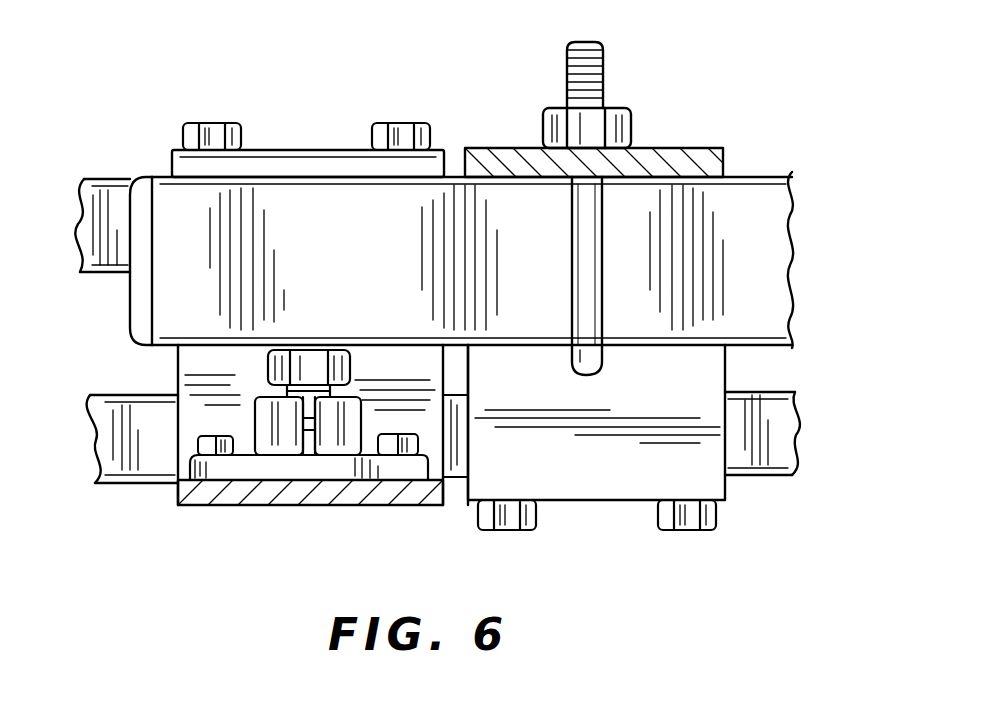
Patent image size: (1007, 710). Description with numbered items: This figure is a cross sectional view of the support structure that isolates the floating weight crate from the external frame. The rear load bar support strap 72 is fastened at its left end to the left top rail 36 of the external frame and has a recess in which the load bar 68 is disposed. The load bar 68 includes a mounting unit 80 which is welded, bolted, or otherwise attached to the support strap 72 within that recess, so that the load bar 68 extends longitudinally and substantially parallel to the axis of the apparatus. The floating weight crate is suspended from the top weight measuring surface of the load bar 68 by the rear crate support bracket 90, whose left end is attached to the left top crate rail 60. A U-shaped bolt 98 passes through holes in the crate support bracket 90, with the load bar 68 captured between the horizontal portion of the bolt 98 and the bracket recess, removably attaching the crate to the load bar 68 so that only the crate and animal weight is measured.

The left top rail 36 is at (100, 178).
The left top crate rail 60 is at (100, 440).
The load bar 68 is at (758, 219).
The rear load bar support strap 72 is at (292, 146).
The mounting unit 80 is at (188, 466).
The rear crate support bracket 90 is at (708, 142).
The U-shaped bolt 98 is at (605, 76).